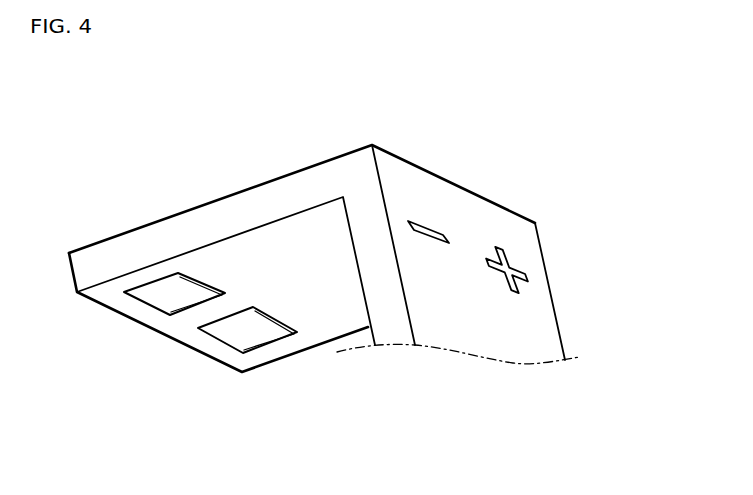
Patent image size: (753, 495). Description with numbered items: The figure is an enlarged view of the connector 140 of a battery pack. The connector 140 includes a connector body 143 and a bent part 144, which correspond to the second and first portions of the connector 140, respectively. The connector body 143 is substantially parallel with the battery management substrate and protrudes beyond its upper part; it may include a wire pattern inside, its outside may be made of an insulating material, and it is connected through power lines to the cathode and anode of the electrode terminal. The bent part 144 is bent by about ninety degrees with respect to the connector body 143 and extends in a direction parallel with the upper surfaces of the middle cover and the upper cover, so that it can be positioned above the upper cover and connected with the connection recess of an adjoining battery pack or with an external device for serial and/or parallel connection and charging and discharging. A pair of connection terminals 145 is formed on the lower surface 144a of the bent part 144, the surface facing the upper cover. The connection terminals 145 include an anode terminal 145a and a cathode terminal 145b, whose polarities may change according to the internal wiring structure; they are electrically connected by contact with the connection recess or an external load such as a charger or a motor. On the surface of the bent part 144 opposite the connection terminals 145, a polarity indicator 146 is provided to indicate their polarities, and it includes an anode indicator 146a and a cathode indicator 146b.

The connector 140 is at (560, 148).
The connector body 143 is at (390, 330).
The bent part 144 is at (112, 248).
The lower surface 144a is at (252, 243).
The connection terminals 145 is at (232, 418).
The anode terminal 145a is at (152, 307).
The cathode terminal 145b is at (225, 338).
The polarity indicator 146 is at (659, 213).
The anode indicator 146a is at (527, 273).
The cathode indicator 146b is at (444, 232).